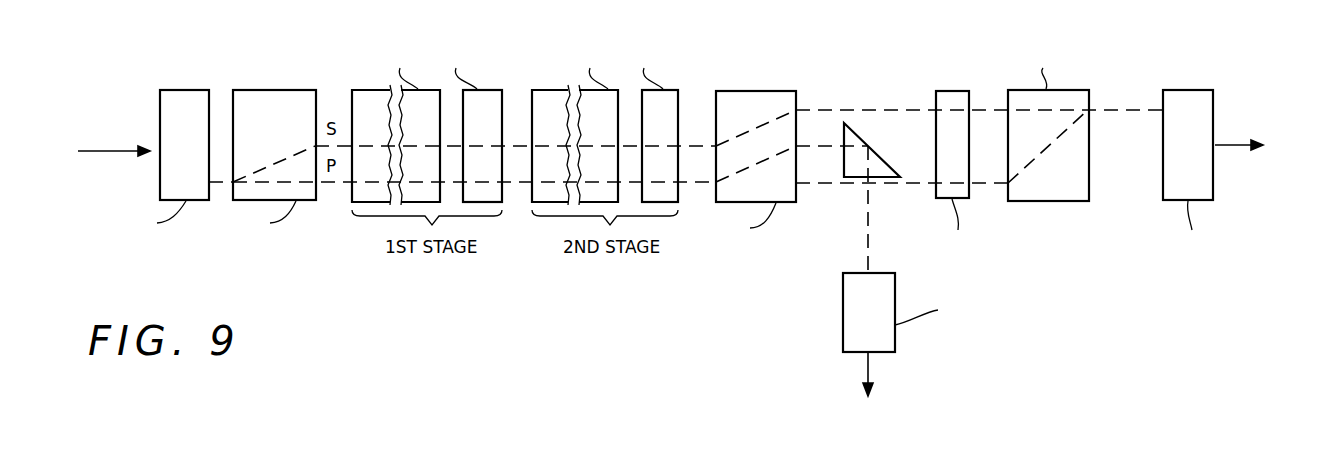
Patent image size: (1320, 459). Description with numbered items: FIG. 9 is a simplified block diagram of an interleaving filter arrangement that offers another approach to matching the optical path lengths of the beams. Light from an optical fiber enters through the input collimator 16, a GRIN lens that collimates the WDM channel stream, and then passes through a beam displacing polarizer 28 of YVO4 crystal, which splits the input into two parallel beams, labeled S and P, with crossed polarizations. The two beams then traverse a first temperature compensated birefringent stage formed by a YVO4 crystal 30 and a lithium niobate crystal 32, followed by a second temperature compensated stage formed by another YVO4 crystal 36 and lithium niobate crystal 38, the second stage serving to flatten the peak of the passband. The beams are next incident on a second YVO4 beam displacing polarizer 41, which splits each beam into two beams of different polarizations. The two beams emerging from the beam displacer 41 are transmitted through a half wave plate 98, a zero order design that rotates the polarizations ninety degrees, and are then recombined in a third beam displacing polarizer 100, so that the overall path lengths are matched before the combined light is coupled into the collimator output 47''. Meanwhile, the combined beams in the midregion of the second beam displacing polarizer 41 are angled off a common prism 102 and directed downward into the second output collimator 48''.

The collimator 16 is at (183, 89).
The beam displacing polarizer 28 is at (270, 89).
The YVO4 crystal 30 is at (371, 89).
The lithium niobate crystal 32 is at (492, 89).
The YVO4 crystal 36 is at (565, 89).
The lithium niobate crystal 38 is at (678, 89).
The beam displacing polarizer 41 is at (753, 90).
The half wave plate 98 is at (953, 90).
The beam displacement polarizer 100 is at (1065, 202).
The prism 102 is at (858, 136).
The output collimator 47'' is at (1203, 166).
The output collimator 48'' is at (905, 312).